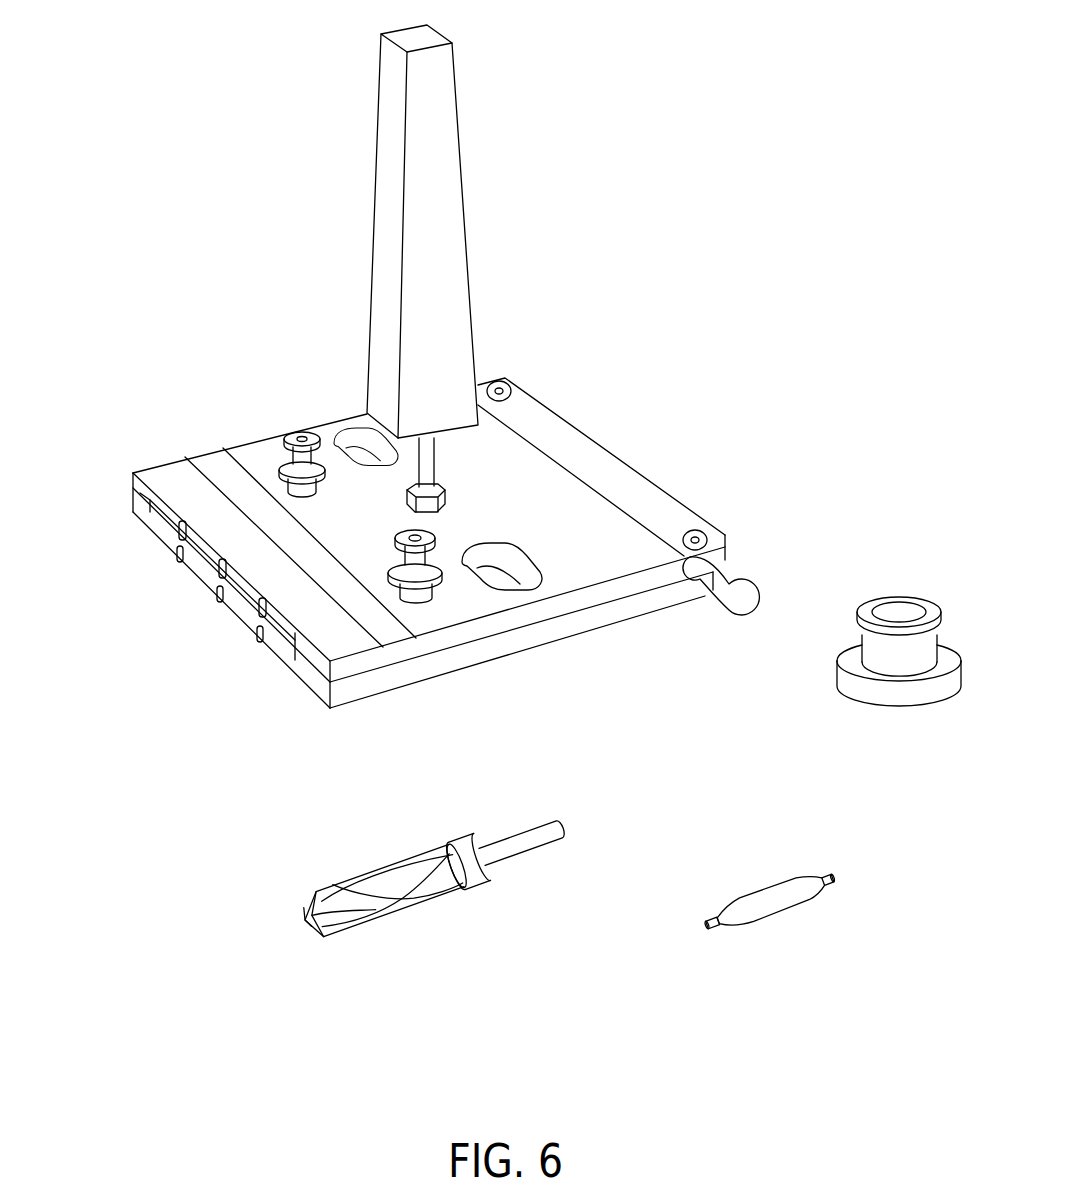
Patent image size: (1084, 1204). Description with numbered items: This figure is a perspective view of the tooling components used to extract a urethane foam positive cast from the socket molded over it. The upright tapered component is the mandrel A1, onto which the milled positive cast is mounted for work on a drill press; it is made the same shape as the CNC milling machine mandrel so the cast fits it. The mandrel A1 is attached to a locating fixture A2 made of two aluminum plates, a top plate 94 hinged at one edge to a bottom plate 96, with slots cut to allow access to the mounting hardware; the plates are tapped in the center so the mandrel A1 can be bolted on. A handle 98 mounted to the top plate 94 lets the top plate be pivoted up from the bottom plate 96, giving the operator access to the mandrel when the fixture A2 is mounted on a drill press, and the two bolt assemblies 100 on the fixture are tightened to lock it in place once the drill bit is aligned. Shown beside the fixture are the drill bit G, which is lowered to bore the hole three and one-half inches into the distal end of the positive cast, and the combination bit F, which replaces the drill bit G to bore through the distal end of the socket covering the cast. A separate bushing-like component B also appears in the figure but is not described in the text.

The mandrel A1 is at (478, 60).
The locating fixture A2 is at (566, 387).
The drill bushing B is at (898, 573).
The drill bit G is at (447, 928).
The combination bit F is at (802, 933).
The top plate 94 is at (138, 483).
The bottom plate 96 is at (313, 682).
The handle 98 is at (745, 587).
The bolt assemblies 100 is at (283, 456).